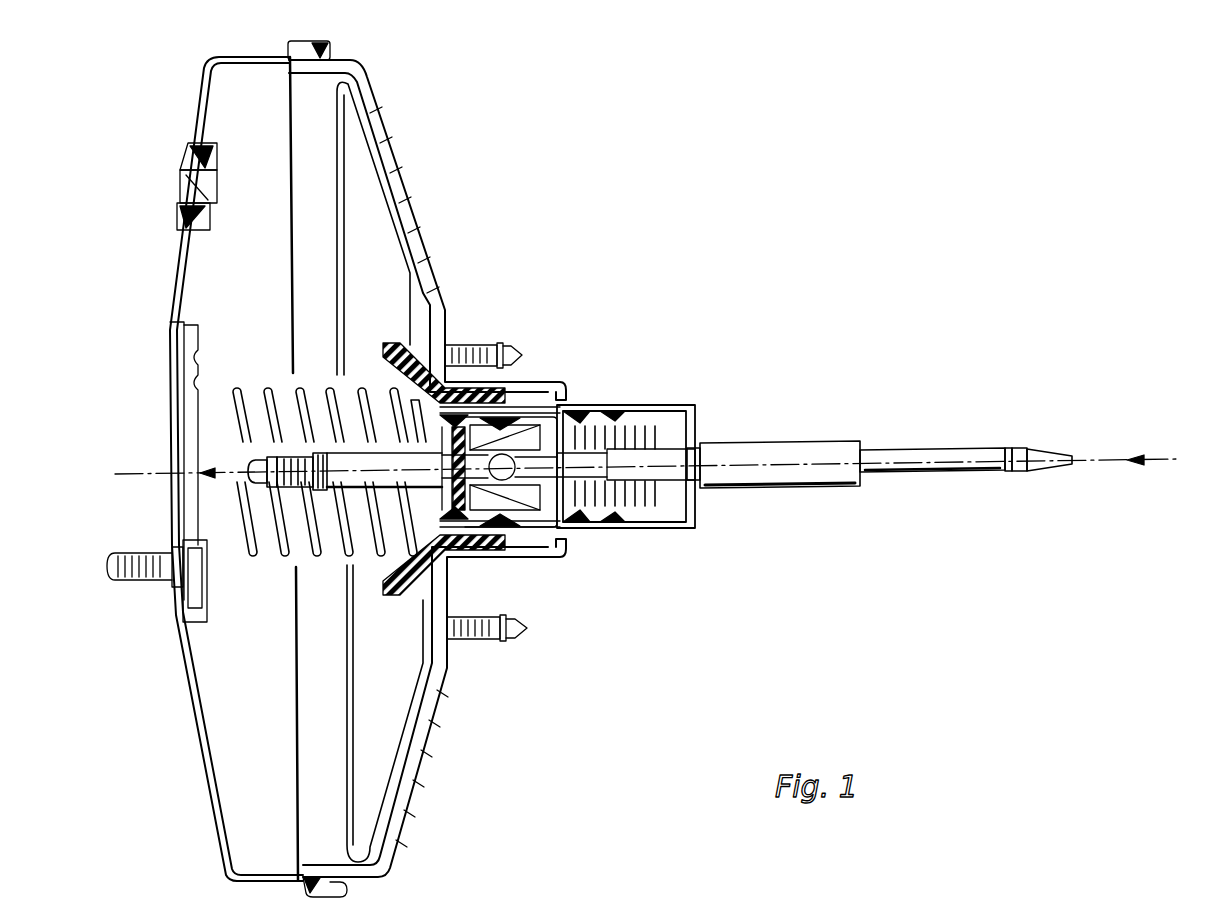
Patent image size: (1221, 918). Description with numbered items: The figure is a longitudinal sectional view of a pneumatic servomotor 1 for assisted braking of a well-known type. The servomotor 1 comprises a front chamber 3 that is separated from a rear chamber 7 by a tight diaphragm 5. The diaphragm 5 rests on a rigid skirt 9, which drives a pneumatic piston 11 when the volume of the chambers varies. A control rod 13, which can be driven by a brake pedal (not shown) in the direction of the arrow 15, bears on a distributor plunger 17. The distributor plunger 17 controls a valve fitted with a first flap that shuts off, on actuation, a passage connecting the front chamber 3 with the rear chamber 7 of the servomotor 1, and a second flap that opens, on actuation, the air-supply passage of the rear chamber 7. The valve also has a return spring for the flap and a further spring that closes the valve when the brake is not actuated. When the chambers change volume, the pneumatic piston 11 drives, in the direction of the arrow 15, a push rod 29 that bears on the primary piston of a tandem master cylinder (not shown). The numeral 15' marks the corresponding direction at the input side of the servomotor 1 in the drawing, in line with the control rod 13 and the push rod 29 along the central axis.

The pneumatic servomotor 1 is at (440, 203).
The front chamber 3 is at (262, 296).
The tight diaphragm 5 is at (368, 122).
The rear chamber 7 is at (383, 150).
The rigid skirt 9 is at (395, 248).
The pneumatic piston 11 is at (388, 598).
The control rod 13 is at (933, 447).
The arrow 15 is at (652, 451).
The input rod 15' is at (332, 460).
The distributor plunger 17 is at (472, 480).
The push rod 29 is at (350, 448).